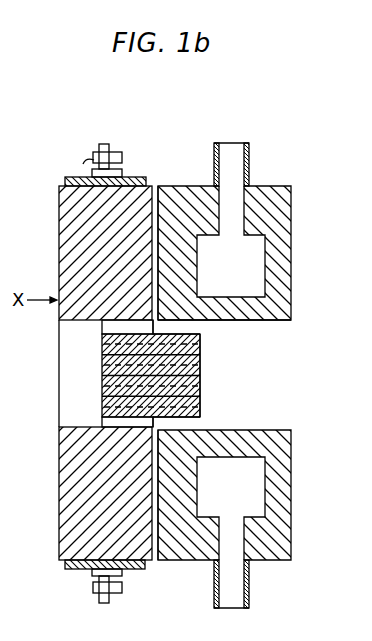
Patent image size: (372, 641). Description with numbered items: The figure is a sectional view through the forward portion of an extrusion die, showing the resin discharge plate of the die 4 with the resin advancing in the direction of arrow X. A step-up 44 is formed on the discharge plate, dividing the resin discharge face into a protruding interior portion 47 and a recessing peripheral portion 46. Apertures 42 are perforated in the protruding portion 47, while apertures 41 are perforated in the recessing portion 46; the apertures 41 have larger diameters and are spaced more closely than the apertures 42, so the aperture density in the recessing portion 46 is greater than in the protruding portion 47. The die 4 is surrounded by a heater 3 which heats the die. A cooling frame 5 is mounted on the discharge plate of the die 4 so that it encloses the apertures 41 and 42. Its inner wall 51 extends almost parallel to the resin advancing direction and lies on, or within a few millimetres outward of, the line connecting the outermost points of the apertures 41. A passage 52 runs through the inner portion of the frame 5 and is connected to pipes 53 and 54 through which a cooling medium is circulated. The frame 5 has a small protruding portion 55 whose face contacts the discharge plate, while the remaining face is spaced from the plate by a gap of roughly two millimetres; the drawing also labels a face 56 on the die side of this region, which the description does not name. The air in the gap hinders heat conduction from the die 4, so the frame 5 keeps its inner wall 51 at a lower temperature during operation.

The heater 3 is at (143, 175).
The die 4 is at (58, 504).
The cooling frame 5 is at (267, 186).
The apertures 41 is at (103, 331).
The apertures 42 is at (102, 395).
The step-up 44 is at (177, 332).
The recessing portion 46 is at (172, 437).
The protruding portion 47 is at (201, 366).
The inner wall 51 is at (243, 322).
The passage 52 is at (243, 272).
The pipe 53 is at (247, 173).
The pipe 54 is at (246, 594).
The small protruding portion 55 is at (156, 320).
The inner face of left block 56 is at (152, 315).